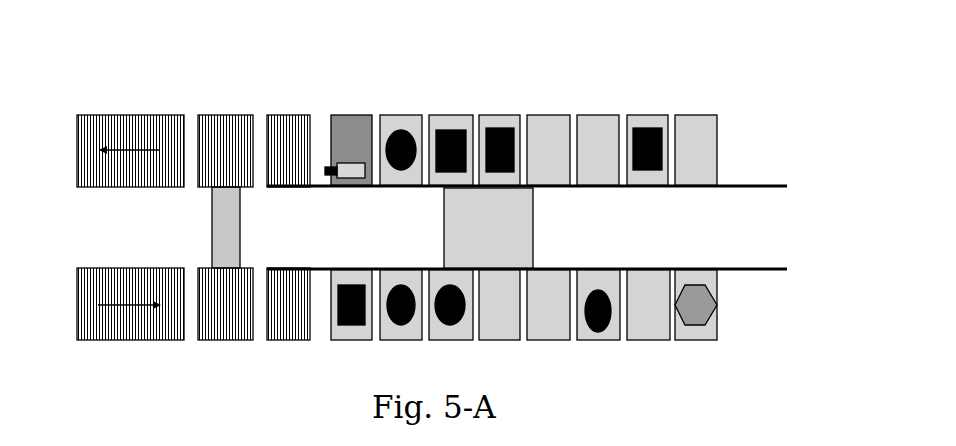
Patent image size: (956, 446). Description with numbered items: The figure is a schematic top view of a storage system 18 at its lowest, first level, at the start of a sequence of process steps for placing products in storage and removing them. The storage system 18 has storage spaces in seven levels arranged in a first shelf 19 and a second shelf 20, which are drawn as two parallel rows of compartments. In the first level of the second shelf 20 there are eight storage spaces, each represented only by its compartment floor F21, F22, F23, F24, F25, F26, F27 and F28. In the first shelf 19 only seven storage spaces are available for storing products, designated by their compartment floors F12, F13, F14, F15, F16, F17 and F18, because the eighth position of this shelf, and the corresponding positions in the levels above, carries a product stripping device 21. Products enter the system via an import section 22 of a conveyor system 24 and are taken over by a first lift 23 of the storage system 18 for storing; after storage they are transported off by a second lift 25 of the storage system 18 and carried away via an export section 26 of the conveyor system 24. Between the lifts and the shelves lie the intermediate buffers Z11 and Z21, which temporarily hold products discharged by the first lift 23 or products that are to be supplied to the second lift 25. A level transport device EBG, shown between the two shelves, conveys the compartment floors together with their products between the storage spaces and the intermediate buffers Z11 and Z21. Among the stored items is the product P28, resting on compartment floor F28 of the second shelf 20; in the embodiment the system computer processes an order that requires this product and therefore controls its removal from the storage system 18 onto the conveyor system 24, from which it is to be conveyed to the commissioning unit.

The export section 26 is at (92, 132).
The second lift 25 is at (208, 130).
The intermediate buffer Z11 is at (293, 132).
The product stripping device 21 is at (353, 178).
The compartment floor F12 is at (393, 122).
The compartment floor F13 is at (442, 121).
The compartment floor F14 is at (495, 121).
The compartment floor F15 is at (547, 121).
The compartment floor F16 is at (597, 121).
The compartment floor F17 is at (643, 121).
The compartment floor F18 is at (690, 121).
The storage system 18 is at (783, 111).
The first shelf 19 is at (771, 148).
The level transport device EBG is at (525, 228).
The import section 22 is at (95, 331).
The first lift 23 is at (228, 331).
The intermediate buffer Z21 is at (298, 332).
The conveyor system 24 is at (132, 356).
The compartment floor F21 is at (342, 334).
The compartment floor F22 is at (392, 334).
The compartment floor F23 is at (450, 334).
The compartment floor F24 is at (496, 334).
The compartment floor F25 is at (543, 334).
The compartment floor F26 is at (593, 334).
The compartment floor F27 is at (643, 334).
The compartment floor F28 is at (692, 334).
The product P28 is at (704, 312).
The second shelf 20 is at (775, 310).